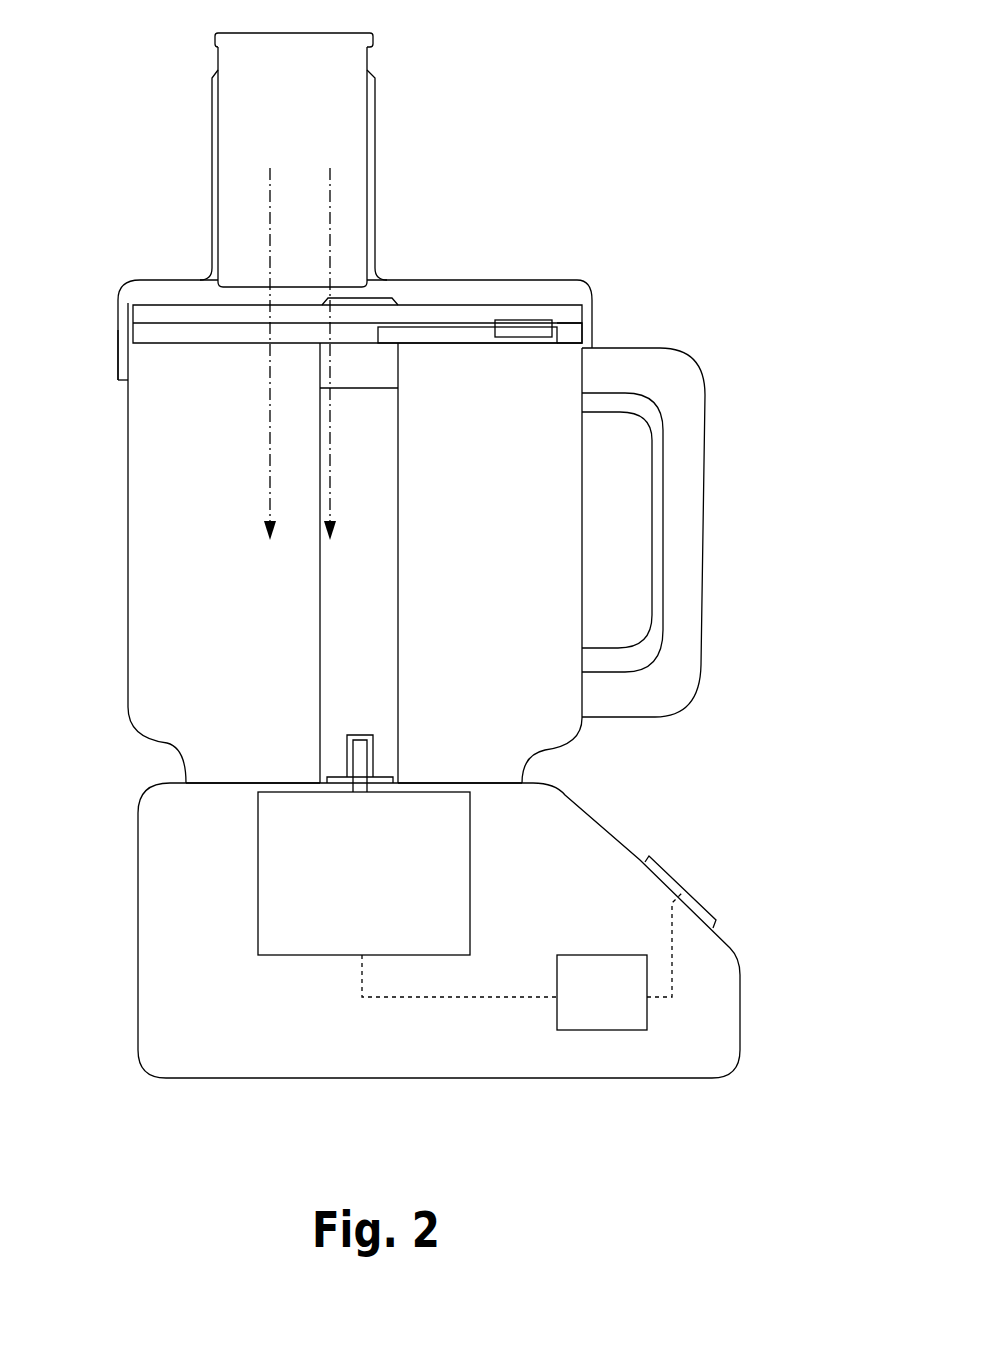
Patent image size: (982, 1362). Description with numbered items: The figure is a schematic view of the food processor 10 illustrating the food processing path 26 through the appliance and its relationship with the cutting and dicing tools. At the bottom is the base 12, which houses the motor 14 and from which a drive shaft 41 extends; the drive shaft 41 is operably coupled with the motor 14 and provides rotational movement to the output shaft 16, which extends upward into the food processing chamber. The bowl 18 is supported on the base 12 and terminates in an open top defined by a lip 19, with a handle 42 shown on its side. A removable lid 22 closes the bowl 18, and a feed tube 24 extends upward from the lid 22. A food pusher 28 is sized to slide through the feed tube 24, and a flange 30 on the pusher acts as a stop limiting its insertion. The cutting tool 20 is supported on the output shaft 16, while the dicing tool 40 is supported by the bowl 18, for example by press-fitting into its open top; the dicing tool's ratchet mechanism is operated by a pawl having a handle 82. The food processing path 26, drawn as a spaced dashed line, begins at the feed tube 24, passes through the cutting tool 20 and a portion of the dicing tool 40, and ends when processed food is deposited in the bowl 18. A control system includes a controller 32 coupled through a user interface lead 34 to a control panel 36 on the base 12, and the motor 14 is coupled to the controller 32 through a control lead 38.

The food processor 10 is at (130, 26).
The base 12 is at (130, 812).
The motor 14 is at (282, 915).
The output shaft 16 is at (320, 580).
The bowl 18 is at (582, 500).
The lip 19 is at (117, 330).
The cutting tool 20 is at (573, 313).
The lid 22 is at (489, 276).
The feed tube 24 is at (210, 147).
The food processing path 26 is at (272, 220).
The food pusher 28 is at (236, 200).
The flange 30 is at (366, 33).
The controller 32 is at (613, 1030).
The user interface lead 34 is at (673, 965).
The control panel 36 is at (693, 897).
The control lead 38 is at (398, 1000).
The dicing tool 40 is at (575, 333).
The drive shaft 41 is at (355, 733).
The handle 42 is at (703, 580).
The handle 82 is at (536, 312).